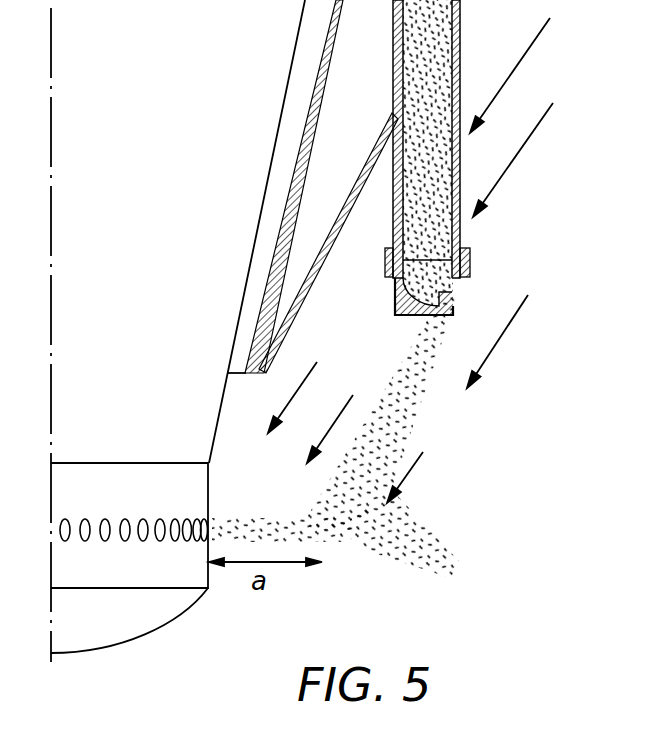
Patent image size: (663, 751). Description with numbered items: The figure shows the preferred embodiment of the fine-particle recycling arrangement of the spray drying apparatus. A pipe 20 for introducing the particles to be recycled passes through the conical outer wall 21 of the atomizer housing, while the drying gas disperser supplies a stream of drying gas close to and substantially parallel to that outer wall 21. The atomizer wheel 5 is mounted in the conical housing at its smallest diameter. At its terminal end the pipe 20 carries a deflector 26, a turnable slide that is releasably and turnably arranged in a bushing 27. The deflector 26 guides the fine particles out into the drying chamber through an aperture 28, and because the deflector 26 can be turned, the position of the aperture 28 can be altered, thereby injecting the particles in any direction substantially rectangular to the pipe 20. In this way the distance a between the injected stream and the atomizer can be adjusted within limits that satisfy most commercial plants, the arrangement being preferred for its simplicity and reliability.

The atomizer wheel 5 is at (124, 463).
The pipe 20 is at (459, 33).
The outer walls of the conical housing 21 is at (316, 262).
The deflector 26 is at (393, 300).
The bushing 27 is at (470, 254).
The aperture 28 is at (455, 293).